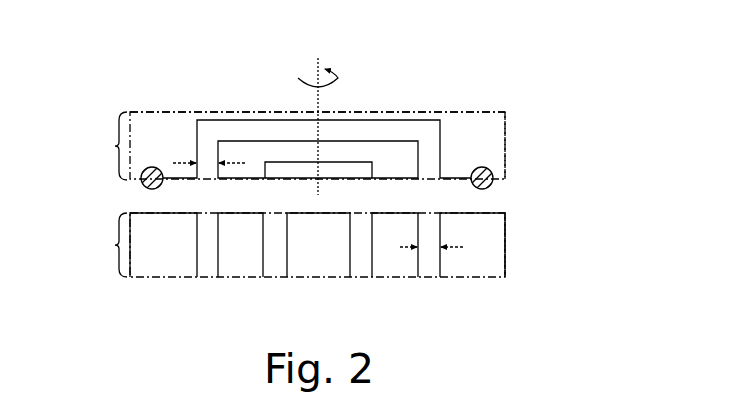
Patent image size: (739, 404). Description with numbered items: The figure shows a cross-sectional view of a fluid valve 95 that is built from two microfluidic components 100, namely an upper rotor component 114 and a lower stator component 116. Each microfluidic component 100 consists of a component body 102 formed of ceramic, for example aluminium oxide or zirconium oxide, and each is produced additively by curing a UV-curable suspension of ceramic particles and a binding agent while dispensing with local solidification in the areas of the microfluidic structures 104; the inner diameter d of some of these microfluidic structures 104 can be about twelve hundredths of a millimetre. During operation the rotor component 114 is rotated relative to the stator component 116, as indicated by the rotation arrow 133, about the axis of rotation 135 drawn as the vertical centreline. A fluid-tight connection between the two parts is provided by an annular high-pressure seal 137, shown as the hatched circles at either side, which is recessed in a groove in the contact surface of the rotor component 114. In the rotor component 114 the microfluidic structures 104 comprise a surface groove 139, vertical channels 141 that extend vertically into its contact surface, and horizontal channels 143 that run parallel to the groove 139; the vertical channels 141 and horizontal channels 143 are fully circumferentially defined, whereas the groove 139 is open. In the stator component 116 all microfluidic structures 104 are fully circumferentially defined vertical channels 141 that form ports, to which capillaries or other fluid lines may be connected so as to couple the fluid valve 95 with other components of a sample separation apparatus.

The fluid valve 95 is at (113, 90).
The microfluidic component 100 is at (549, 53).
The component body 102 is at (158, 120).
The microfluidic structures 104 is at (280, 177).
The rotor component 114 is at (100, 146).
The stator component 116 is at (101, 245).
The rotation arrow 133 is at (312, 80).
The axis of rotation 135 is at (328, 66).
The high-pressure seal 137 is at (150, 165).
The surface groove 139 is at (340, 172).
The vertical channels 141 is at (207, 137).
The horizontal channels 143 is at (308, 130).